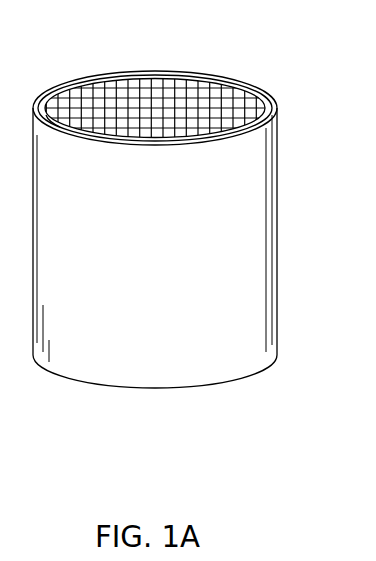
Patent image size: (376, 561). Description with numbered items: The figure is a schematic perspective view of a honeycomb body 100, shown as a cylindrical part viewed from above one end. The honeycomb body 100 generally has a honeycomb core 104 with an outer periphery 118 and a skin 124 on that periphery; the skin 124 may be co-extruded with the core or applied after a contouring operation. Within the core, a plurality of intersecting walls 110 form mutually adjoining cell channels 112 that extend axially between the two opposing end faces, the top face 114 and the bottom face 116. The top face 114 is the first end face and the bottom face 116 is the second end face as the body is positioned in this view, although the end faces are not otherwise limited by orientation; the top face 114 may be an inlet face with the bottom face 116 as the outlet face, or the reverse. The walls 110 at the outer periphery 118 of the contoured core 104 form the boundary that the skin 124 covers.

The honeycomb body 100 is at (117, 58).
The honeycomb core 104 is at (162, 72).
The intersecting walls 110 is at (182, 87).
The cell channels 112 is at (254, 105).
The top face 114 is at (287, 96).
The bottom face 116 is at (146, 402).
The outer periphery 118 is at (52, 107).
The skin 124 is at (255, 183).